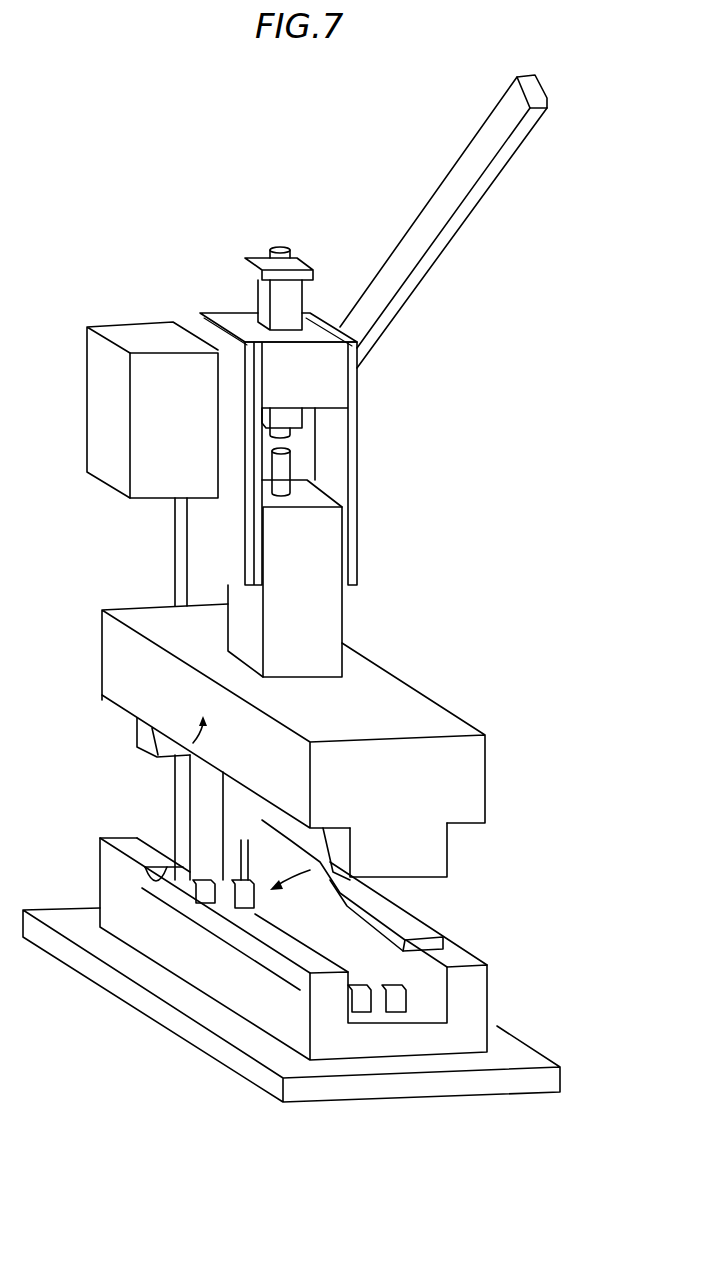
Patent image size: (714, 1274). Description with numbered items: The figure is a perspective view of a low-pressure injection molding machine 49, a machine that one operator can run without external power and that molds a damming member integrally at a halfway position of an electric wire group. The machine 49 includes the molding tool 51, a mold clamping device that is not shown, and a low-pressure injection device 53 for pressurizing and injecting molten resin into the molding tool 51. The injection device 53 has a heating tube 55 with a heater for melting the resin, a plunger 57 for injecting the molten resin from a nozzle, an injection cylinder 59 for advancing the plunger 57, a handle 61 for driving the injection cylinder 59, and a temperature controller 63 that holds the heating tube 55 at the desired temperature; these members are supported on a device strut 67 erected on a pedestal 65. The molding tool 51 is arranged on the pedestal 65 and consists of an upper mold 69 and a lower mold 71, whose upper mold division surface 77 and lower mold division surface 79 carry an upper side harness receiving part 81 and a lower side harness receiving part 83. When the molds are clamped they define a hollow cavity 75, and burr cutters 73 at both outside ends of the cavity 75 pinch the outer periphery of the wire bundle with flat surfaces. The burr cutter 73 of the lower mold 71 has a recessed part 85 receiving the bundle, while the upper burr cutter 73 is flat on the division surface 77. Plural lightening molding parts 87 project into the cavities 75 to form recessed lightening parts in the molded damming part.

The low-pressure injection molding machine 49 is at (211, 204).
The molding tool 51 is at (600, 752).
The low-pressure injection device 53 is at (388, 406).
The heating tube 55 is at (340, 612).
The plunger 57 is at (282, 462).
The injection cylinder 59 is at (258, 297).
The handle 61 is at (475, 198).
The temperature controller 63 is at (100, 402).
The pedestal 65 is at (540, 1050).
The device strut 67 is at (175, 574).
The upper mold 69 is at (490, 780).
The lower mold 71 is at (492, 982).
The burr cutters 73 is at (210, 770).
The cavity 75 is at (137, 749).
The upper mold division surface 77 is at (128, 720).
The lower mold division surface 79 is at (442, 947).
The upper side harness receiving part 81 is at (78, 740).
The lower side harness receiving part 83 is at (512, 845).
The recessed part 85 is at (163, 878).
The lightening molding parts 87 is at (195, 879).